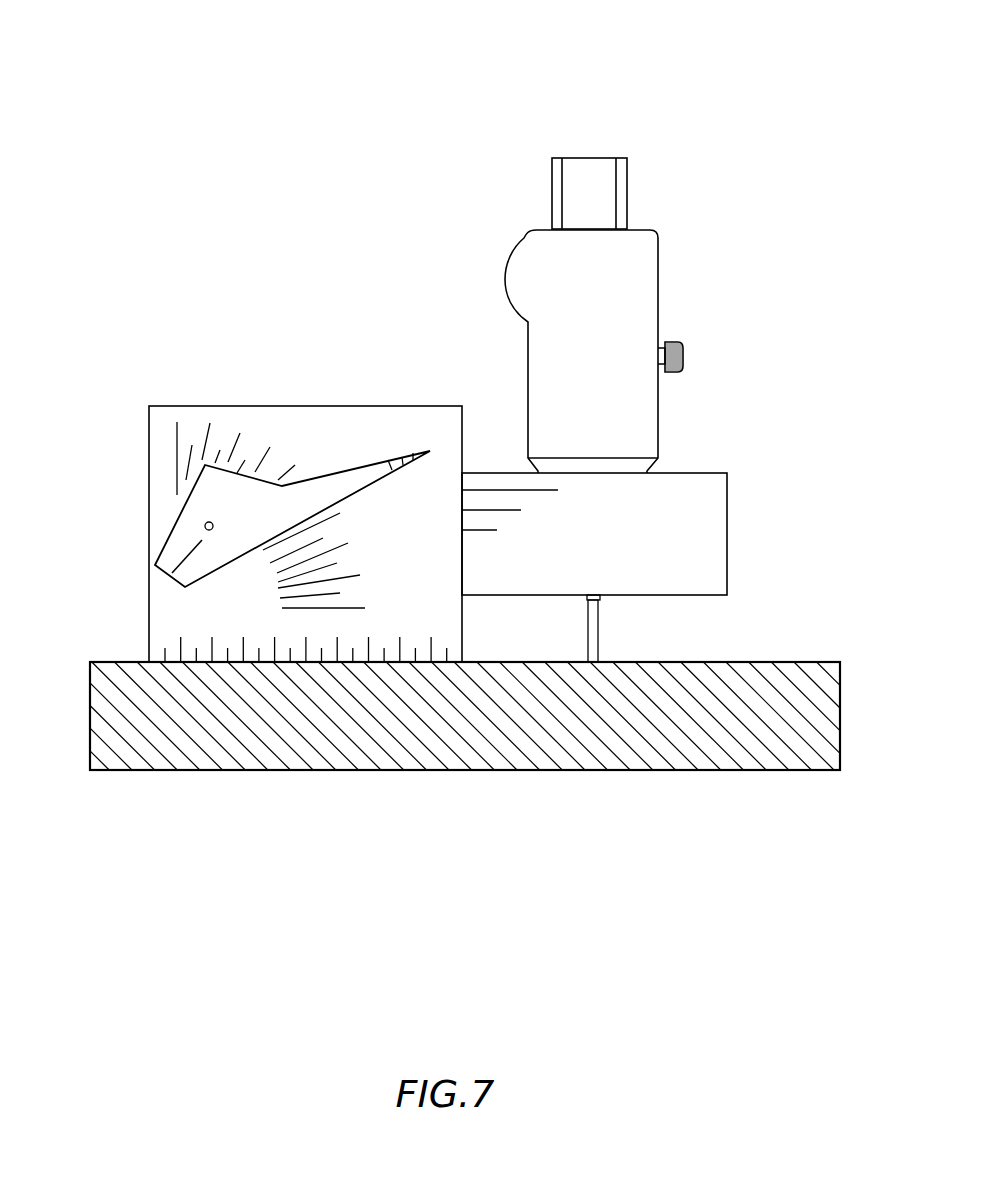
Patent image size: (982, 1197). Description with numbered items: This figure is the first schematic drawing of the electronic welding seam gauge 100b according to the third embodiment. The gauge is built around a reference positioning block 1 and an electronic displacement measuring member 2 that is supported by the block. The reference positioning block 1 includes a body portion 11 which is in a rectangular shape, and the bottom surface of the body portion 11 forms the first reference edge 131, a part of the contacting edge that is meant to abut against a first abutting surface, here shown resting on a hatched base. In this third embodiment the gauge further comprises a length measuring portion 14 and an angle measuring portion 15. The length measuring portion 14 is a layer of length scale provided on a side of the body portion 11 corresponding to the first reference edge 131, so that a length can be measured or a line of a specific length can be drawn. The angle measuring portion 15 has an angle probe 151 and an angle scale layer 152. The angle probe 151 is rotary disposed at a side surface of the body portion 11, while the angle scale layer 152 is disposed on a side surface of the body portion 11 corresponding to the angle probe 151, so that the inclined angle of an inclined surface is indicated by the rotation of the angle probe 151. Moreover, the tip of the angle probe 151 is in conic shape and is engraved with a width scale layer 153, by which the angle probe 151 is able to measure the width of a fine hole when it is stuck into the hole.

The electronic welding seam gauge 100b is at (757, 88).
The reference positioning block 1 is at (170, 312).
The electronic displacement measuring member 2 is at (675, 187).
The body portion 11 is at (437, 417).
The length measuring portion 14 is at (158, 658).
The first reference edge 131 is at (300, 662).
The angle measuring portion 15 is at (250, 445).
The angle probe 151 is at (332, 490).
The angle scale layer 152 is at (175, 462).
The width scale layer 153 is at (387, 468).